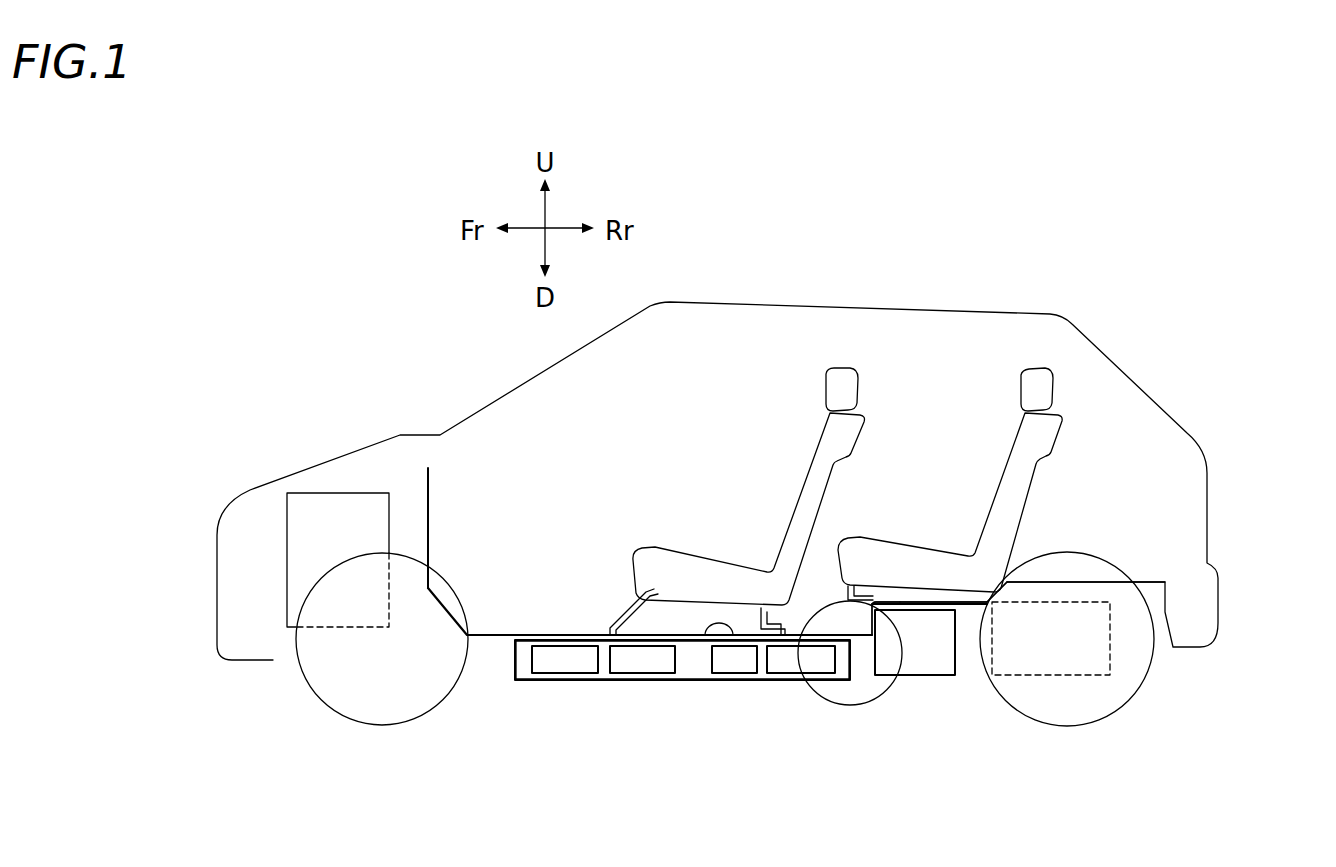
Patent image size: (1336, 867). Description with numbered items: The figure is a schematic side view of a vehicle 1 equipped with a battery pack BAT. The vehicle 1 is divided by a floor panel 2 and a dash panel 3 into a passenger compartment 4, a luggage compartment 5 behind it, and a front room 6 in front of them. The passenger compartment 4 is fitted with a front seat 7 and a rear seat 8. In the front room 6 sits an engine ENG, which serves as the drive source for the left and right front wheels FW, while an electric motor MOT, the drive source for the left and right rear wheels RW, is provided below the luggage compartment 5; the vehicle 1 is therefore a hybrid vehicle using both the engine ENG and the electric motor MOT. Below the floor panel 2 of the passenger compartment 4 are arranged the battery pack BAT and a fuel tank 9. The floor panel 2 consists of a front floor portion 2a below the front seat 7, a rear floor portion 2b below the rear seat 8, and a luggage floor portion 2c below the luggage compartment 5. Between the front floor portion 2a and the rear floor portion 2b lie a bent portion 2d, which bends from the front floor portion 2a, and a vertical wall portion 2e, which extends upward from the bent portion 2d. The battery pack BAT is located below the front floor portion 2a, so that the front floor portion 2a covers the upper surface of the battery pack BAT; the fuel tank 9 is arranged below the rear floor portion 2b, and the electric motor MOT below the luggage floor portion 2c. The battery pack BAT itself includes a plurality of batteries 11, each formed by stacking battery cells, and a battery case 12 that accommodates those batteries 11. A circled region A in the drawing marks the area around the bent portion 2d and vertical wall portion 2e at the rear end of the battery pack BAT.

The vehicle 1 is at (442, 316).
The floor panel 2 is at (512, 634).
The front floor portion 2a is at (738, 662).
The rear floor portion 2b is at (942, 607).
The luggage floor portion 2c is at (1078, 582).
The bent portion 2d is at (859, 600).
The vertical wall portion 2e is at (926, 600).
The dash panel 3 is at (431, 506).
The passenger compartment 4 is at (617, 447).
The luggage compartment 5 is at (1130, 464).
The front room 6 is at (262, 561).
The front seat 7 is at (803, 478).
The rear seat 8 is at (1000, 478).
The fuel tank 9 is at (918, 676).
The batteries 11 is at (557, 663).
The battery case 12 is at (590, 681).
The region A is at (845, 706).
The battery pack BAT is at (673, 682).
The engine ENG is at (287, 596).
The front wheels FW is at (445, 705).
The rear wheels RW is at (1135, 690).
The electric motor MOT is at (1110, 622).